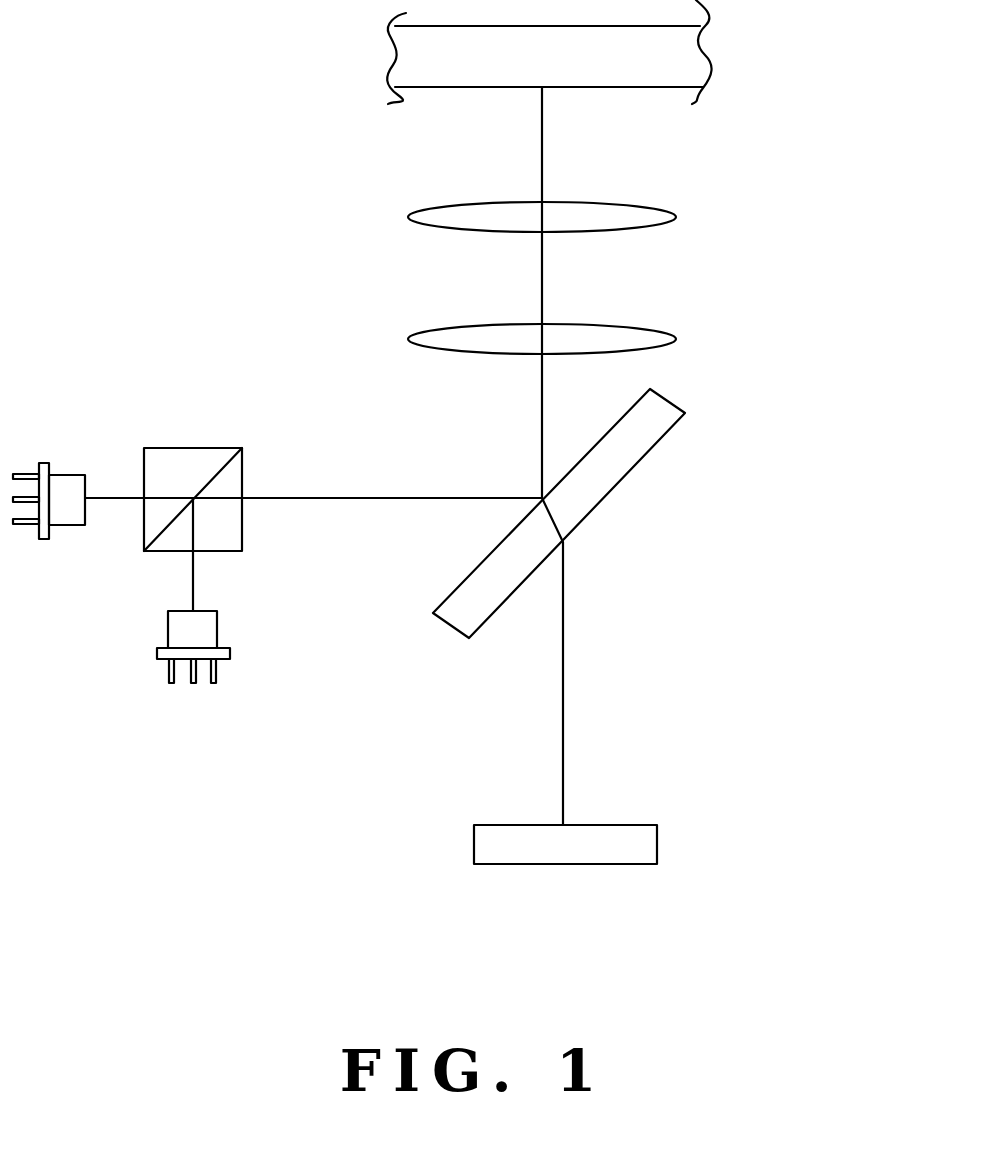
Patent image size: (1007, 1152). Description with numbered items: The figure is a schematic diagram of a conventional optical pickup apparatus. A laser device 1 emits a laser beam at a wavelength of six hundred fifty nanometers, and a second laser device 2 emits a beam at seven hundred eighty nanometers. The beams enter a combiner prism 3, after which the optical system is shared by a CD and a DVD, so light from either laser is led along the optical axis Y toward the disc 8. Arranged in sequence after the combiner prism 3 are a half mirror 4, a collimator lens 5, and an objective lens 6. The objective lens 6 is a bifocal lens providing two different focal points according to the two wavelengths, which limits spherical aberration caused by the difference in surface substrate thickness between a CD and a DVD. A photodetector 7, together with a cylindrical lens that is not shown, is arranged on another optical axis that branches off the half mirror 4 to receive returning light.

The laser device 1 is at (65, 473).
The laser device 2 is at (217, 626).
The combiner prism 3 is at (218, 448).
The half mirror 4 is at (651, 452).
The collimator lens 5 is at (657, 327).
The objective lens 6 is at (657, 204).
The photodetector 7 is at (630, 825).
The disc 8 is at (648, 87).